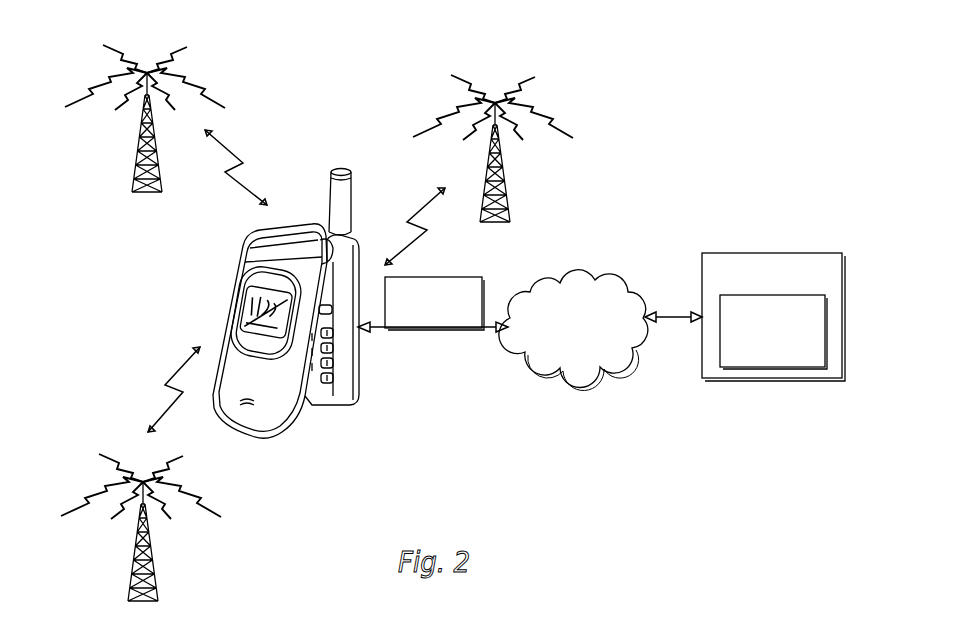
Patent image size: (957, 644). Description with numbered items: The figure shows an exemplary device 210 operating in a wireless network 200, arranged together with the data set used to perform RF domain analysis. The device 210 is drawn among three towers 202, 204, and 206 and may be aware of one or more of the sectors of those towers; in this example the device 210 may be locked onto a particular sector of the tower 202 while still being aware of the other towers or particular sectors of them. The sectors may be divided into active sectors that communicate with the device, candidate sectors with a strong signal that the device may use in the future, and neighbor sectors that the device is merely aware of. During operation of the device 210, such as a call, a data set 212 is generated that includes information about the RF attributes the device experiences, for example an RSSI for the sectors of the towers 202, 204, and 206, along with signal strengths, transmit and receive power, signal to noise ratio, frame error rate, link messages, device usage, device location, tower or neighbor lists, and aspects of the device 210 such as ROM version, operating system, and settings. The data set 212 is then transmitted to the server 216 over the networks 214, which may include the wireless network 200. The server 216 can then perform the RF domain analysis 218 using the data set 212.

The wireless network 200 is at (672, 163).
The tower 202 is at (508, 214).
The tower 204 is at (131, 184).
The tower 206 is at (157, 594).
The device 210 is at (228, 300).
The data set 212 is at (418, 321).
The networks 214 is at (560, 345).
The server 216 is at (816, 284).
The RF domain analysis 218 is at (757, 360).